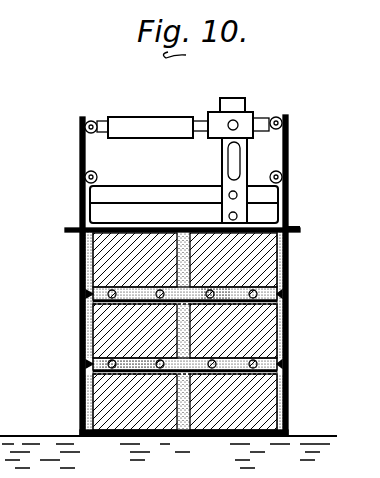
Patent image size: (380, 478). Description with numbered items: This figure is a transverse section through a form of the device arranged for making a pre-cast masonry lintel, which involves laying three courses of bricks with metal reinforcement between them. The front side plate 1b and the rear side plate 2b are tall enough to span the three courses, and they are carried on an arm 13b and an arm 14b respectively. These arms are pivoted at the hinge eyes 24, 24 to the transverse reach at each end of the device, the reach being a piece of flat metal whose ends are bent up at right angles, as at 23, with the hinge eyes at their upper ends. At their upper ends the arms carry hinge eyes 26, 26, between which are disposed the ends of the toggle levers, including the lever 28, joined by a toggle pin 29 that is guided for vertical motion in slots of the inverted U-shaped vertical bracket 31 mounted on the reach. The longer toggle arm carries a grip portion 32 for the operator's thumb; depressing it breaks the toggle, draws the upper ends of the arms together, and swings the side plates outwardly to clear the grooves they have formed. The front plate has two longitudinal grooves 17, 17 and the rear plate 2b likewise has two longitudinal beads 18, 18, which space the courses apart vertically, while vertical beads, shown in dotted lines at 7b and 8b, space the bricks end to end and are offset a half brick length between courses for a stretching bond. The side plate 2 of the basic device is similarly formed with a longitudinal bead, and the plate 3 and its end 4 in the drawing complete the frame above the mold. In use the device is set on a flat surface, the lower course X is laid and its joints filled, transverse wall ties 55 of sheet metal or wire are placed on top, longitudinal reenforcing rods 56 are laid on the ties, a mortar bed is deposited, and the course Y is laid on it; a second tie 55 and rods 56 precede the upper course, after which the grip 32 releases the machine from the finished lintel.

The side plate 1b is at (80, 316).
The side plate 2 is at (80, 244).
The side plate 2b is at (285, 318).
The cover plate 3 is at (70, 228).
The cover plate end 4 is at (295, 228).
The vertical bead 7b is at (80, 405).
The vertical bead 8b is at (285, 390).
The arm 13b is at (80, 262).
The arm 14b is at (285, 270).
The longitudinal groove 17 is at (85, 294).
The longitudinal bead 18 is at (285, 295).
The upturned end 23 is at (288, 200).
The hinge eye 24 is at (80, 173).
The hinge eye 26 is at (91, 120).
The lever 28 is at (286, 140).
The toggle pin 29 is at (237, 121).
The vertical bracket 31 is at (228, 98).
The grip portion 32 is at (136, 117).
The wall tie 55 is at (232, 303).
The reenforcing rod 56 is at (225, 287).
The lower course X is at (255, 420).
The course Y is at (85, 350).